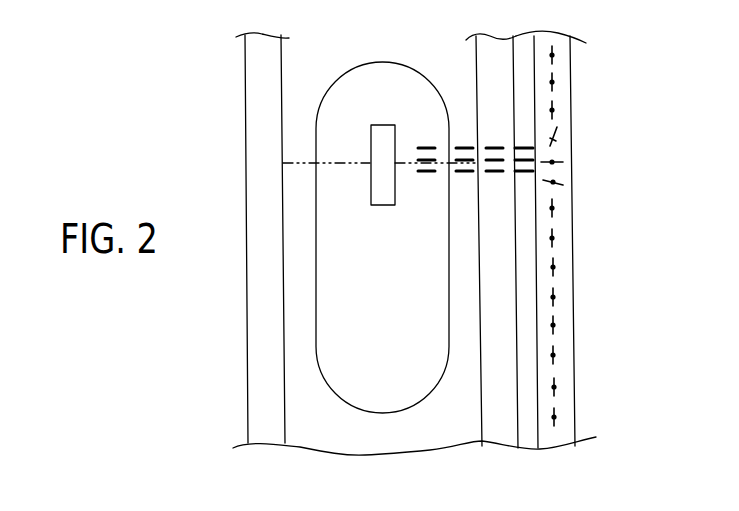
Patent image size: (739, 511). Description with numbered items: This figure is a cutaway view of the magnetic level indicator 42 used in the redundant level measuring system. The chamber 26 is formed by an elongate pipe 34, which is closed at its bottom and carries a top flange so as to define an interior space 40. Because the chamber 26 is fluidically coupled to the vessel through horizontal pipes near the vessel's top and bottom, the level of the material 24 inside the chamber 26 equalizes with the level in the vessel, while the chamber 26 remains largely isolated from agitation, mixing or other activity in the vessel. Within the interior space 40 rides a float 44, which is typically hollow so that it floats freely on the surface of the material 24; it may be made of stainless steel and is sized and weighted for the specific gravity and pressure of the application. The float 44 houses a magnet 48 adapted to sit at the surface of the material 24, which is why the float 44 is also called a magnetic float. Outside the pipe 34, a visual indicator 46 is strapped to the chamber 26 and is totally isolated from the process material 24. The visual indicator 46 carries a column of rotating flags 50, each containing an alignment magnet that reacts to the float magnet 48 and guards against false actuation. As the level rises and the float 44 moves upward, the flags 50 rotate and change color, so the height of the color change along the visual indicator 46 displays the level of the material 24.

The material 24 is at (284, 163).
The chamber 26 is at (216, 69).
The elongate pipe 34 is at (476, 73).
The interior space 40 is at (341, 40).
The magnetic level indicator 42 is at (611, 109).
The float 44 is at (422, 402).
The visual indicator 46 is at (576, 338).
The magnet 48 is at (370, 178).
The rotating flags 50 is at (554, 141).